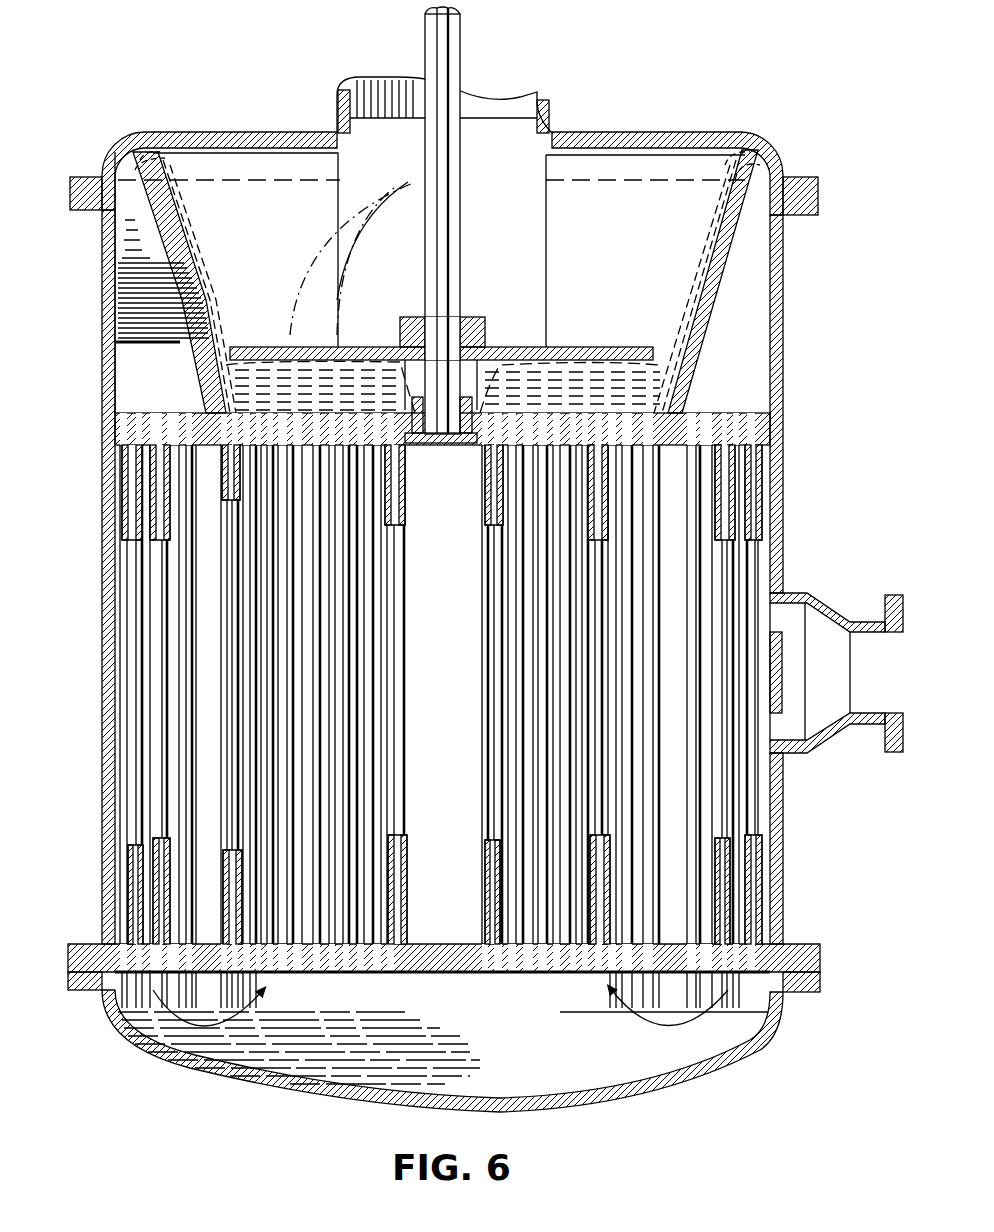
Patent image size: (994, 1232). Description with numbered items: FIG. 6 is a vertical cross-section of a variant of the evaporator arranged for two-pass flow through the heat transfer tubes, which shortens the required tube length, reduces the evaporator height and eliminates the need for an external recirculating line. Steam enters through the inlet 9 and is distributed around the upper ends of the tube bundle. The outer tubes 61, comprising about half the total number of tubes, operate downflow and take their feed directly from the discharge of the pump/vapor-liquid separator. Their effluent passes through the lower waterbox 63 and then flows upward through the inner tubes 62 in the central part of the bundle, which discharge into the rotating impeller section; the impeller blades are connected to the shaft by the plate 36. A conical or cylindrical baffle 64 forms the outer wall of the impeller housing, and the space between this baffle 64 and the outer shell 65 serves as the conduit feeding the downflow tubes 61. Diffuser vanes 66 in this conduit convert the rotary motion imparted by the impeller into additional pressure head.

The steam inlet 9 is at (880, 658).
The plate 36 is at (586, 345).
The outer tubes 61 is at (745, 547).
The inner tubes 62 is at (515, 605).
The lower waterbox 63 is at (458, 1025).
The baffle 64 is at (735, 240).
The outer shell 65 is at (782, 291).
The diffuser vanes 66 is at (130, 245).